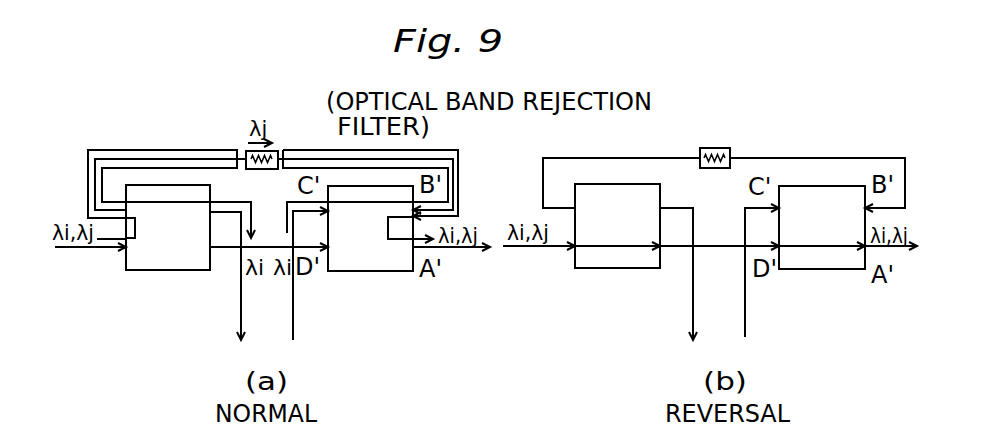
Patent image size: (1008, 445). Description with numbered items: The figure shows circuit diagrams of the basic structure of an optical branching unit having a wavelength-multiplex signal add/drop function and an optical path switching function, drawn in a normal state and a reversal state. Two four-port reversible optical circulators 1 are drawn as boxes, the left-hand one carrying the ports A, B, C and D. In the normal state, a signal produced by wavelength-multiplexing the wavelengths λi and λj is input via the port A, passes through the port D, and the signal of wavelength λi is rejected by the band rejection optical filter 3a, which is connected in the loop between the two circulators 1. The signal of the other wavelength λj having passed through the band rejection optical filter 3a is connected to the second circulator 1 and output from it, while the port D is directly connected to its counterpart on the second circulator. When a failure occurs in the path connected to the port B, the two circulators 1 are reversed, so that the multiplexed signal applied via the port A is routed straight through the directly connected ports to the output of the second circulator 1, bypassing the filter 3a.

The four-port reversible optical circulator 1 is at (158, 271).
The band rejection optical filter 3a is at (280, 150).
The port A is at (315, 261).
The port B is at (394, 184).
The port C is at (453, 255).
The port D is at (494, 261).